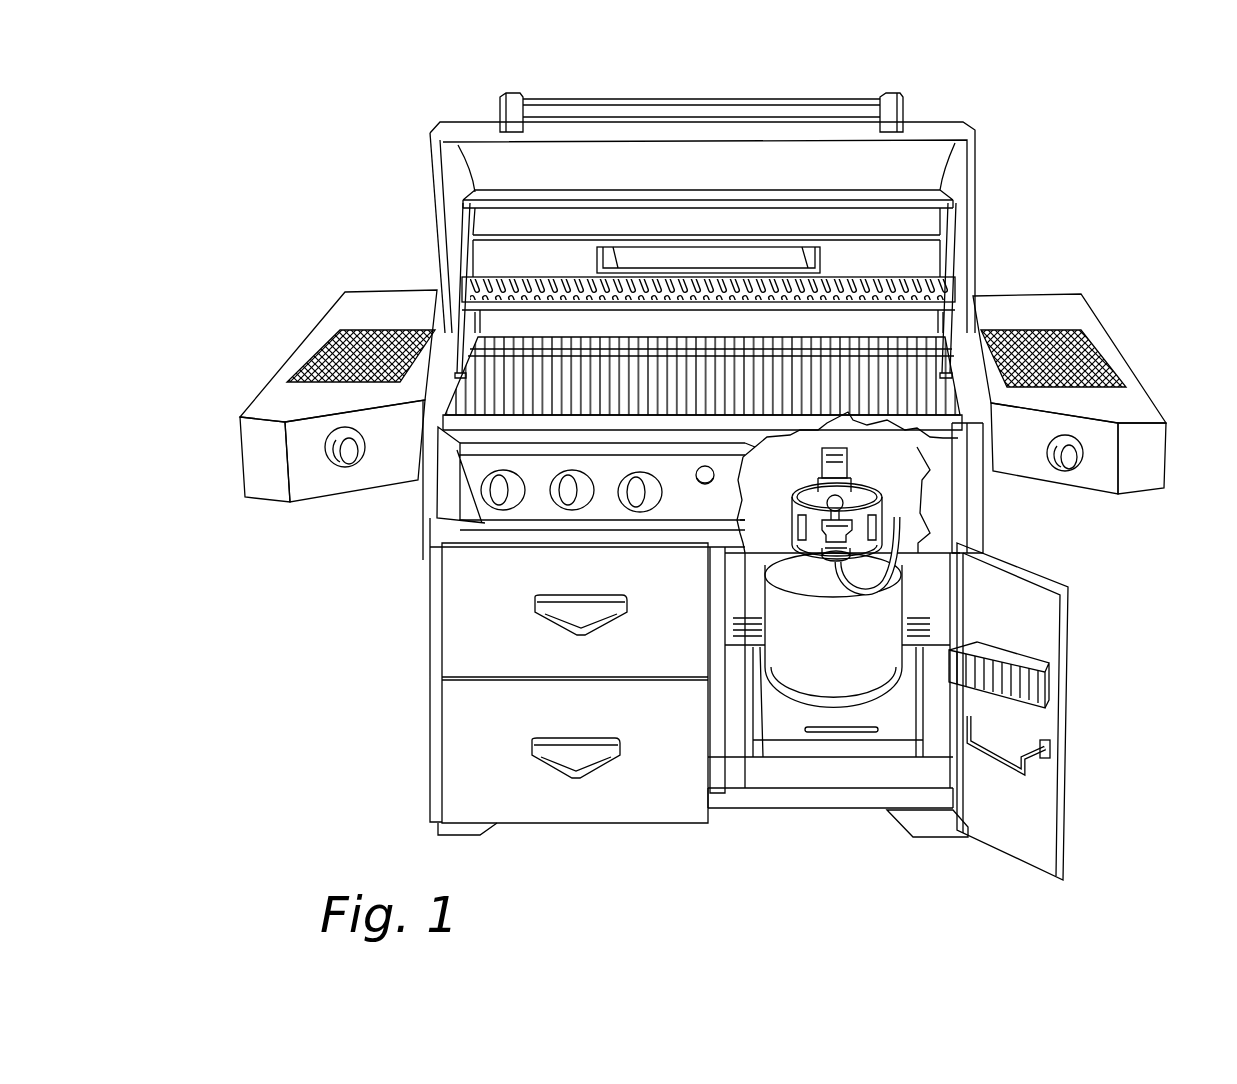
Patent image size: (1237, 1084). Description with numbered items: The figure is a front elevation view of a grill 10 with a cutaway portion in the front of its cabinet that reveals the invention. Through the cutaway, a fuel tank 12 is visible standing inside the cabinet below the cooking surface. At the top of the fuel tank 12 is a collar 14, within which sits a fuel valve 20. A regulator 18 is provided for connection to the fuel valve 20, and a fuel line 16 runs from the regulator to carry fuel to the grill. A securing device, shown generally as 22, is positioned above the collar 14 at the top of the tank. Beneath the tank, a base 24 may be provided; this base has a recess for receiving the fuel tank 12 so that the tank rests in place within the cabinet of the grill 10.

The grill 10 is at (1033, 108).
The fuel tank 12 is at (852, 682).
The collar 14 is at (792, 528).
The fuel line 16 is at (907, 547).
The regulator 18 is at (827, 557).
The fuel valve 20 is at (843, 510).
The securing device 22 is at (812, 469).
The base 24 is at (765, 728).